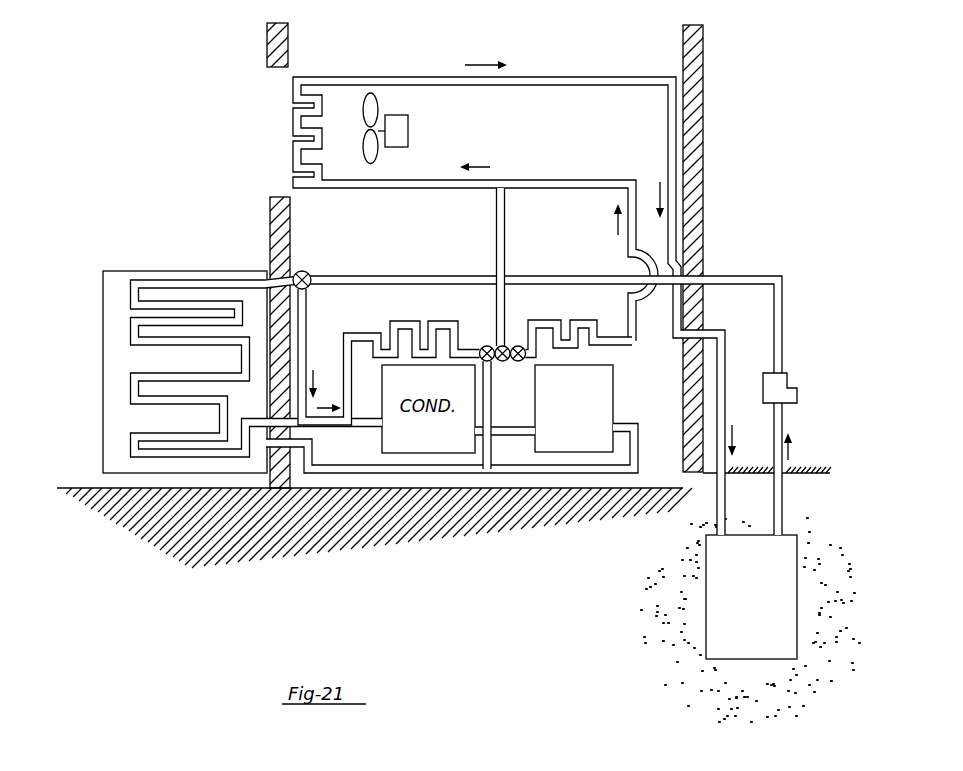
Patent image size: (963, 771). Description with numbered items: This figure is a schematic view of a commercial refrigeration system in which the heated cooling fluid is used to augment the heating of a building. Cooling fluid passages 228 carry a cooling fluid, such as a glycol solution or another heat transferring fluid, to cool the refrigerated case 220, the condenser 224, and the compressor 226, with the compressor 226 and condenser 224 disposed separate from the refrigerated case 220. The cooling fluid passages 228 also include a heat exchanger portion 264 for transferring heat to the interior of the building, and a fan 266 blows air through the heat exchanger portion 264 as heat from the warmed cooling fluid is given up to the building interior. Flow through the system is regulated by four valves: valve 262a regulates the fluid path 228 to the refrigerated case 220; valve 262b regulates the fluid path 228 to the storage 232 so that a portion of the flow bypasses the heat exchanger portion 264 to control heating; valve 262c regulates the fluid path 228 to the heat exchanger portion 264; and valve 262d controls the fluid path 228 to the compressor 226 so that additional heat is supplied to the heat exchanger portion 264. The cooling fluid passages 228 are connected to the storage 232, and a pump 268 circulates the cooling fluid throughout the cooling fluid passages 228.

The refrigerated case 220 is at (197, 267).
The condenser 224 is at (397, 438).
The compressor 226 is at (614, 404).
The cooling fluid passages 228 is at (136, 336).
The storage 232 is at (706, 556).
The valve 262a is at (309, 273).
The valve 262b is at (487, 346).
The valve 262c is at (502, 361).
The valve 262d is at (519, 346).
The heat exchanger portion 264 is at (300, 80).
The fan 266 is at (408, 131).
The pump 268 is at (763, 395).